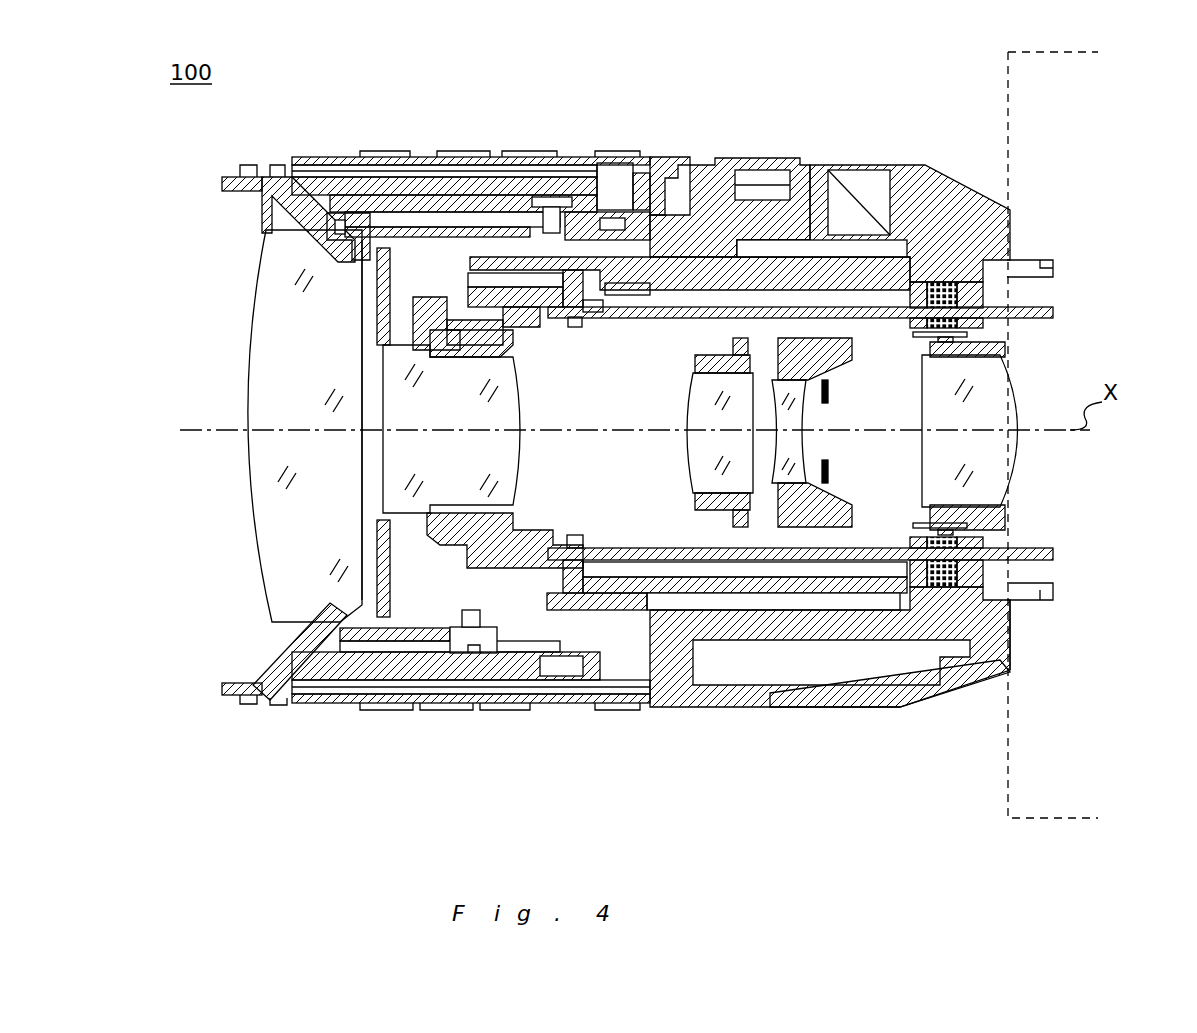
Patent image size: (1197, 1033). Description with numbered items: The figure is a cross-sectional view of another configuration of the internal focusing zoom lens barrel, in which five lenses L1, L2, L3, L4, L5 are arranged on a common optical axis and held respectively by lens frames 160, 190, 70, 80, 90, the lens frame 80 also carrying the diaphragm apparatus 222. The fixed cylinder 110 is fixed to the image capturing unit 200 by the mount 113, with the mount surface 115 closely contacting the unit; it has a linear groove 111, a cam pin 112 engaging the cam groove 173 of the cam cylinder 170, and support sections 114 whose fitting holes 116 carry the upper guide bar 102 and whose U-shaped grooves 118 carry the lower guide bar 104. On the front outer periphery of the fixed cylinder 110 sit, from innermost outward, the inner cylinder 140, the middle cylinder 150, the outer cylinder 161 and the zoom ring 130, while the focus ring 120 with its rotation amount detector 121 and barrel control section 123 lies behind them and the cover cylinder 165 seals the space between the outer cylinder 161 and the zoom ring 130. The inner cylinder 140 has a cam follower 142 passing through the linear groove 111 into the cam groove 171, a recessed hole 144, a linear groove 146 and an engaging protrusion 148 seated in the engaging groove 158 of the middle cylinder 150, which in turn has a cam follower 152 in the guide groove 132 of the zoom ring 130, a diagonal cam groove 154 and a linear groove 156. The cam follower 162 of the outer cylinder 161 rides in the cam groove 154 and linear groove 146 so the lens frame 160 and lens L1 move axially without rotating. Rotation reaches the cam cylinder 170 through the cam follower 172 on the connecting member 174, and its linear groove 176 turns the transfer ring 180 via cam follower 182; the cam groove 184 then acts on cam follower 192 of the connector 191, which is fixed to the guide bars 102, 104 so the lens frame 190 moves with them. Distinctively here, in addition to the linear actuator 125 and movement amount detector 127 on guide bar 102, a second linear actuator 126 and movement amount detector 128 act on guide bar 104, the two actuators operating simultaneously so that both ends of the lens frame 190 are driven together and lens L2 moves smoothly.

The guide bar 102 is at (1053, 312).
The guide bar 104 is at (1053, 553).
The fixed cylinder 110 is at (960, 195).
The linear groove 111 is at (770, 620).
The cam pin 112 is at (700, 284).
The mount 113 is at (1035, 595).
The support section 114 is at (590, 320).
The mount surface 115 is at (1012, 620).
The fitting hole 116 is at (580, 322).
The U-shaped groove 118 is at (580, 538).
The focus ring 120 is at (740, 158).
The rotation amount detector 121 is at (785, 185).
The barrel control section 123 is at (880, 190).
The linear actuator 125 is at (960, 297).
The linear actuator 126 is at (960, 572).
The movement amount detector 127 is at (967, 335).
The movement amount detector 128 is at (960, 540).
The zoom ring 130 is at (612, 162).
The guide groove 132 is at (547, 198).
The inner cylinder 140 is at (380, 200).
The cam follower 142 is at (830, 605).
The recessed hole 144 is at (627, 640).
The linear groove 146 is at (400, 228).
The engaging protrusion 148 is at (350, 270).
The middle cylinder 150 is at (455, 217).
The cam follower 152 is at (662, 178).
The cam groove 154 is at (507, 222).
The linear groove 156 is at (597, 650).
The engaging groove 158 is at (345, 240).
The lens frame 160 is at (280, 640).
The outer cylinder 161 is at (330, 195).
The cam follower 162 is at (640, 190).
The cover cylinder 165 is at (420, 207).
The cam cylinder 170 is at (480, 262).
The cam groove 171 is at (900, 668).
The cam follower 172 is at (500, 685).
The cam groove 173 is at (620, 290).
The connecting member 174 is at (470, 640).
The linear groove 176 is at (470, 283).
The transfer ring 180 is at (377, 300).
The cam follower 182 is at (530, 322).
The cam groove 184 is at (515, 338).
The lens frame 190 is at (513, 515).
The connector 191 is at (362, 330).
The cam follower 192 is at (480, 350).
The image capturing unit 200 is at (1006, 68).
The diaphragm apparatus 222 is at (830, 387).
The lens frame 70 is at (705, 380).
The lens frame 80 is at (810, 375).
The lens frame 90 is at (1005, 350).
The lens L1 is at (248, 480).
The lens L2 is at (523, 470).
The lens L3 is at (695, 470).
The lens L4 is at (806, 462).
The lens L5 is at (1020, 470).